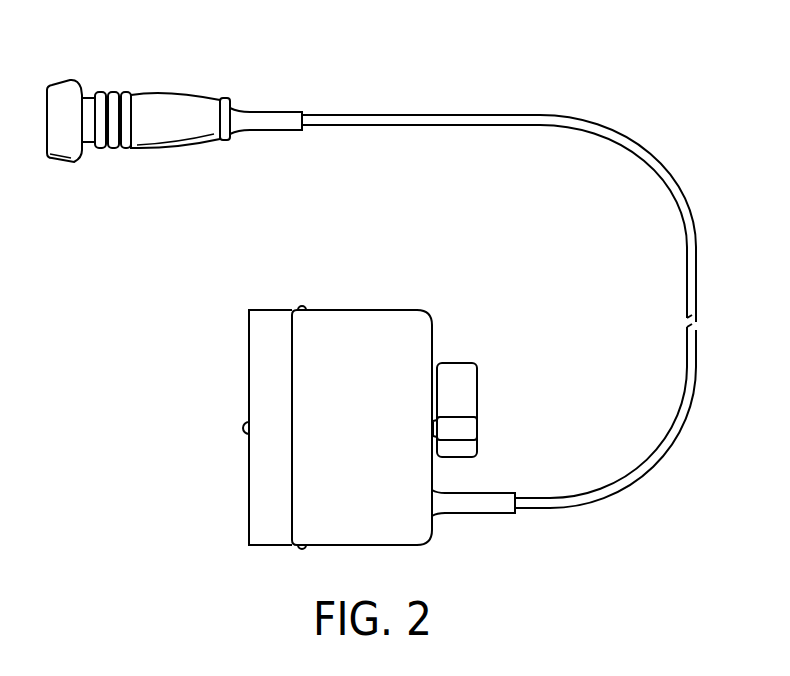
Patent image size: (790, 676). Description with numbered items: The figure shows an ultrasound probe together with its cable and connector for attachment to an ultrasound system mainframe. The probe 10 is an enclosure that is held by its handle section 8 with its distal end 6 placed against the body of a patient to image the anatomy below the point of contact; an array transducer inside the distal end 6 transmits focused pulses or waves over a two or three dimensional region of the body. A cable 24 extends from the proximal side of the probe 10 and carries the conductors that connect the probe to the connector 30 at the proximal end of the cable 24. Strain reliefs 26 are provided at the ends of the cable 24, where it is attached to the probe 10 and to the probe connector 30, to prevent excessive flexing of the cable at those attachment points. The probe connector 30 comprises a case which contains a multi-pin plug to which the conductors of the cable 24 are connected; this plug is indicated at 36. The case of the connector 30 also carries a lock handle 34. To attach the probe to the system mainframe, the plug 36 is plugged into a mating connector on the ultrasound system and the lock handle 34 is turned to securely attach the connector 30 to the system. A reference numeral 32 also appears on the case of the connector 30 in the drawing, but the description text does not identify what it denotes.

The distal end 6 is at (63, 80).
The handle section 8 is at (208, 142).
The ultrasound probe enclosure 10 is at (160, 101).
The cable 24 is at (687, 248).
The strain relief 26 is at (268, 130).
The probe connector 30 is at (351, 394).
The housing 32 is at (352, 310).
The lock handle 34 is at (477, 378).
The plug 36 is at (229, 382).